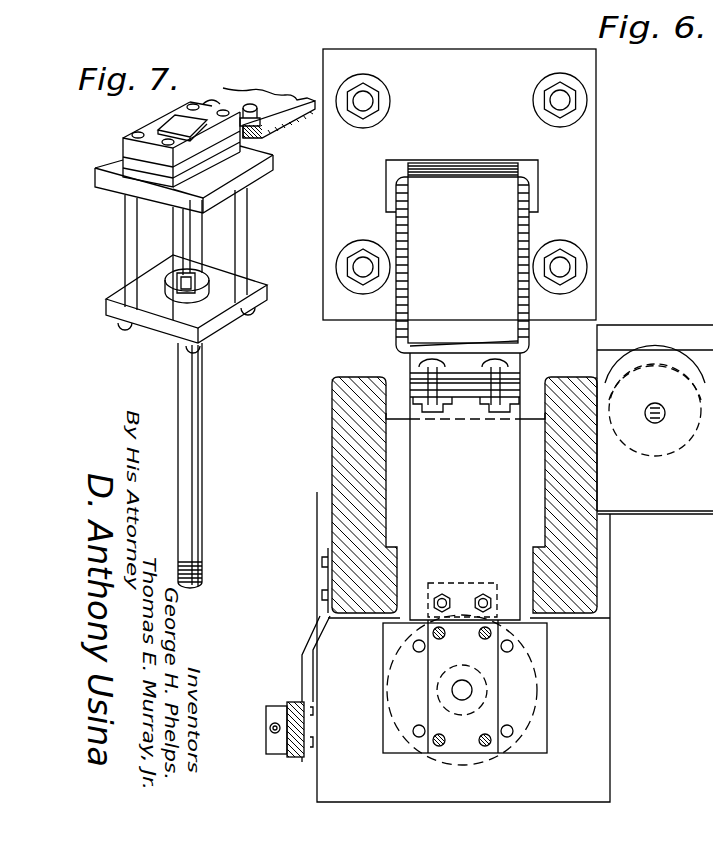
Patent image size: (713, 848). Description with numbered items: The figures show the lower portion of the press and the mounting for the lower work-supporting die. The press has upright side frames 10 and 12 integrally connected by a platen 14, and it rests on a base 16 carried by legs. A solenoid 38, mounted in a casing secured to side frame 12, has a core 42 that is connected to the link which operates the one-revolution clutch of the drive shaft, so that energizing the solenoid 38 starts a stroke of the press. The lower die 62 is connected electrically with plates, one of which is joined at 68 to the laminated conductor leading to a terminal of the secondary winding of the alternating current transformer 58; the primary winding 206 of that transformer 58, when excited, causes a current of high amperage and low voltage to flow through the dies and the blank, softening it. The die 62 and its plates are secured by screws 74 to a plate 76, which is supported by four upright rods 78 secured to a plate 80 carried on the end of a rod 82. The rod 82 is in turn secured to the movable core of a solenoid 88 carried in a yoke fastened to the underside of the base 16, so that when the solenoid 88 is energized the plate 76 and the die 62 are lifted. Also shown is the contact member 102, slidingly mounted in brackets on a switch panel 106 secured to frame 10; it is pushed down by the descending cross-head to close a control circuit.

In FIG. 6, the upright side frame 10 is at (332, 457).
In FIG. 6, the upright side frame 12 is at (585, 538).
In FIG. 6, the platen 14 is at (595, 725).
In FIG. 6, the base 16 is at (704, 792).
In FIG. 6, the solenoid 38 is at (655, 419).
In FIG. 6, the core 42 is at (655, 423).
In FIG. 6, the alternating current transformer 58 is at (459, 184).
In FIG. 6, the lower die 62 is at (462, 639).
In FIG. 6, the connection 68 is at (465, 486).
In FIG. 7, the screws 74 is at (140, 132).
In FIG. 6, the plate 76 is at (548, 716).
In FIG. 7, the plate 76 is at (113, 182).
In FIG. 6, the upright rods 78 is at (423, 743).
In FIG. 7, the upright rods 78 is at (185, 240).
In FIG. 7, the plate 80 is at (152, 325).
In FIG. 7, the rod 82 is at (200, 383).
In FIG. 6, the solenoid 88 is at (398, 725).
In FIG. 6, the contact member 102 is at (268, 732).
In FIG. 6, the switch panel 106 is at (297, 700).
In FIG. 6, the primary winding 206 is at (531, 192).